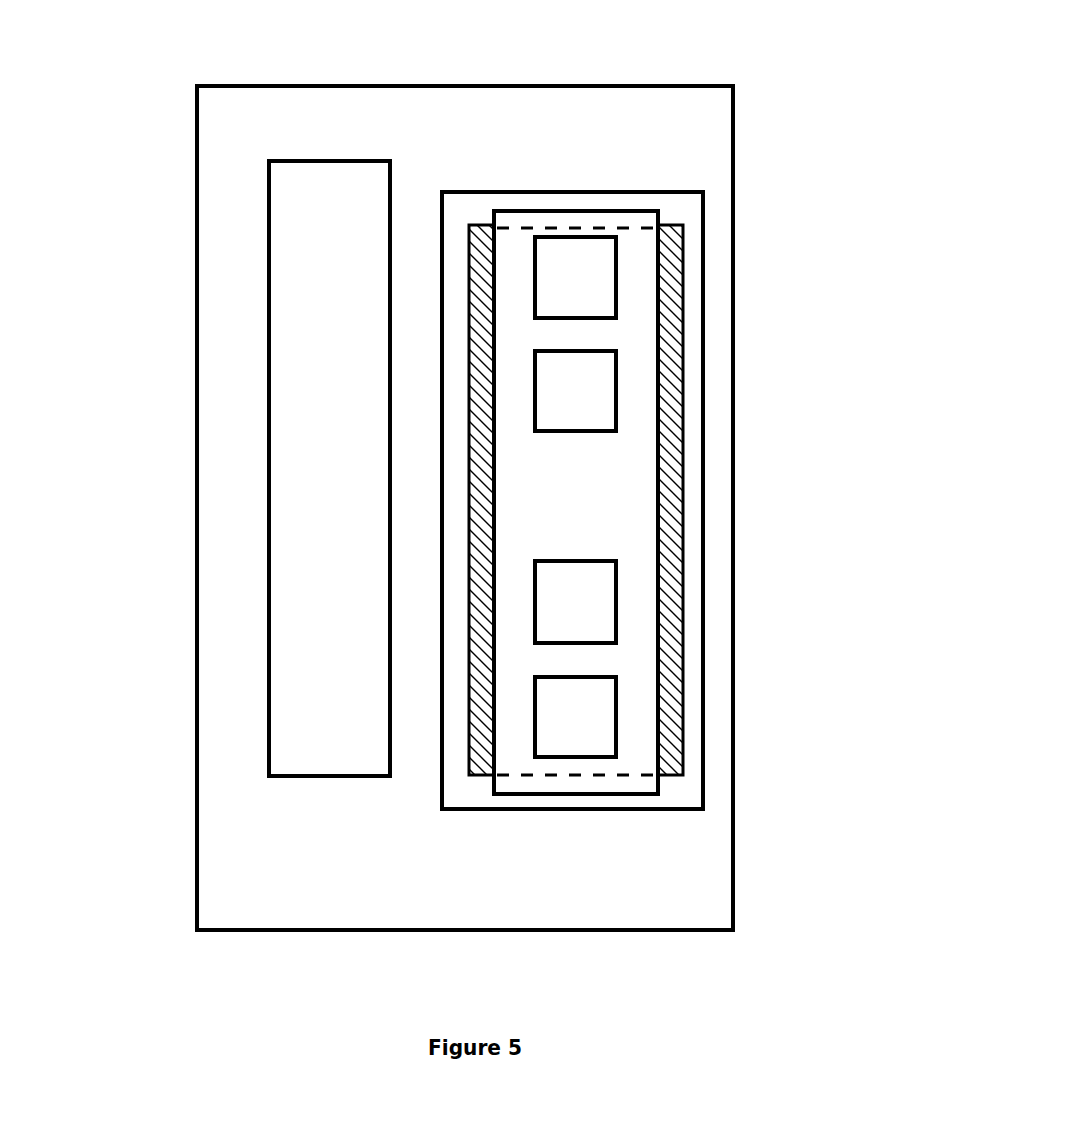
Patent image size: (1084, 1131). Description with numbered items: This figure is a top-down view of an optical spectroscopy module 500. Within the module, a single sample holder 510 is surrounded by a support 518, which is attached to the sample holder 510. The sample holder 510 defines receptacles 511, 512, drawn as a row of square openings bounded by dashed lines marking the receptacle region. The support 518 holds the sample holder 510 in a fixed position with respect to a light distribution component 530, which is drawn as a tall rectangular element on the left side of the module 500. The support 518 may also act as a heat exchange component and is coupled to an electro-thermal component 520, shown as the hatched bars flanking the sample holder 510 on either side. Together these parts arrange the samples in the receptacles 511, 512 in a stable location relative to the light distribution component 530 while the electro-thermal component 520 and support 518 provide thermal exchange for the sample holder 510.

The optical spectroscopy module 500 is at (180, 80).
The sample holder 510 is at (507, 210).
The receptacle 511 is at (560, 230).
The receptacle 512 is at (598, 345).
The support 518 is at (703, 482).
The electro-thermal component 520 is at (683, 658).
The light distribution component 530 is at (268, 433).